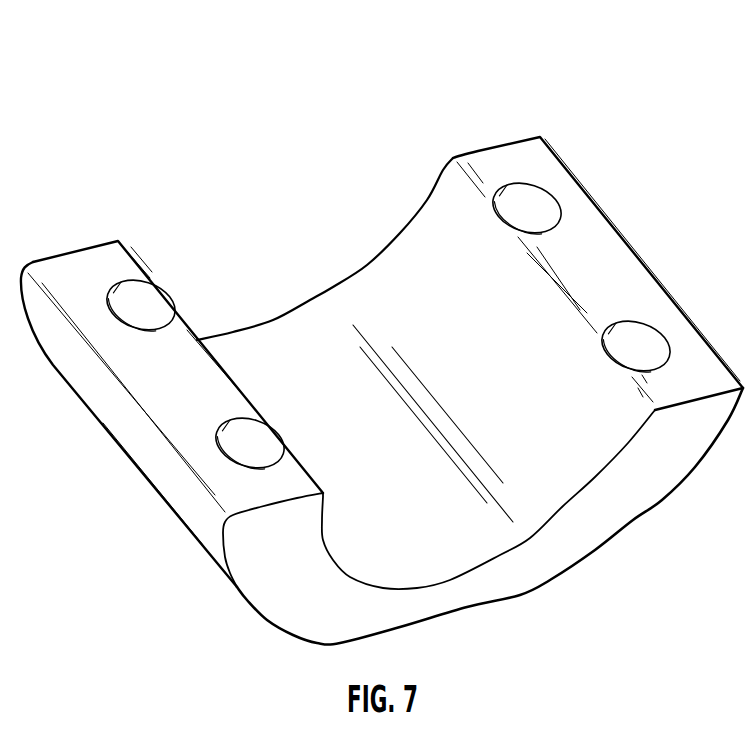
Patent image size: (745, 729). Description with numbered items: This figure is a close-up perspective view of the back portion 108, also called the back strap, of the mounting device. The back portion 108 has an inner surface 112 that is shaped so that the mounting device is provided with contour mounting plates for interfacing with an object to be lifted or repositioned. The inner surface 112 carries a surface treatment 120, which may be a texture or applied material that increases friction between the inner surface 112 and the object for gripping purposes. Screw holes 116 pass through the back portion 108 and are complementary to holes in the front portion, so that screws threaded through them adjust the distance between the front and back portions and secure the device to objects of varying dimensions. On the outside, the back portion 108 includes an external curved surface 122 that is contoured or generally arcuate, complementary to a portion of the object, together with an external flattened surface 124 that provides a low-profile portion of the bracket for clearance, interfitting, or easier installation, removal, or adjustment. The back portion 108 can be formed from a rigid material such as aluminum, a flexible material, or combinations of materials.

The back portion 108 is at (382, 342).
The inner surface 112 is at (348, 314).
The screw holes 116 is at (540, 210).
The surface treatment 120 is at (288, 375).
The external curved surface 122 is at (623, 531).
The external flattened surface 124 is at (446, 618).